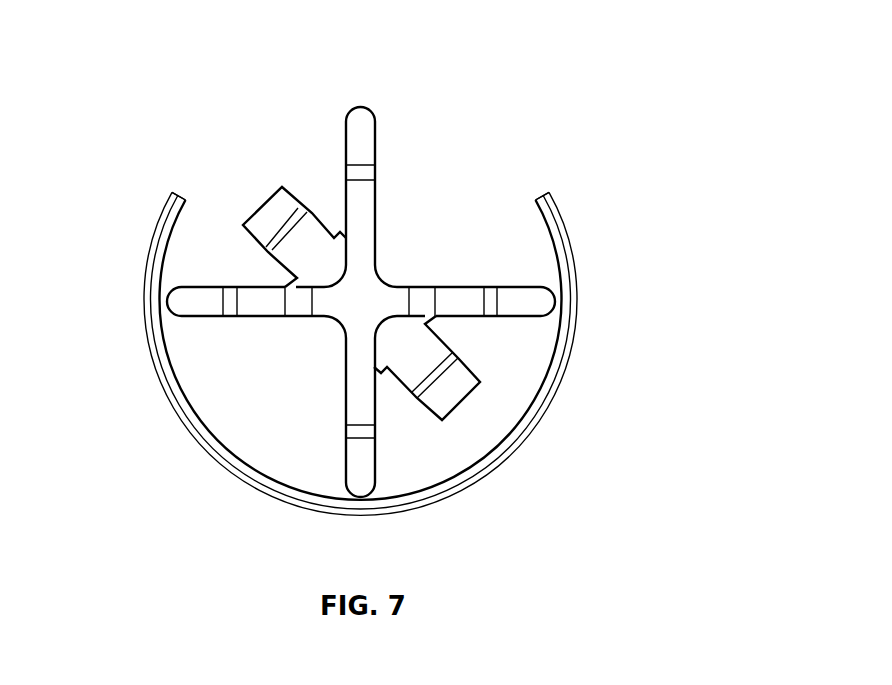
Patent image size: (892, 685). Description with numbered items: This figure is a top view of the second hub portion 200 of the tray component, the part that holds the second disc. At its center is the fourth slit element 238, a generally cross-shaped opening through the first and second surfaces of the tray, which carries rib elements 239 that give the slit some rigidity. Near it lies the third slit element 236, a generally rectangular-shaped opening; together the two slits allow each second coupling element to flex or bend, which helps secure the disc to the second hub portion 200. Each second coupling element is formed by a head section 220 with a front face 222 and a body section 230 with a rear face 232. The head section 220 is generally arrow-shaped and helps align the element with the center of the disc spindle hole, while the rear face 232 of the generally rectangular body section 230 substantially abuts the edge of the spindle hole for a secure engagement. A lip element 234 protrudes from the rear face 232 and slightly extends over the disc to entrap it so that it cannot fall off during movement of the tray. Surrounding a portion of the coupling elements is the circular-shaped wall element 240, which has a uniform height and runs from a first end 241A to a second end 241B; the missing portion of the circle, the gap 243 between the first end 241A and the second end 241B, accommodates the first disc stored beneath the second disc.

The second hub portion 200 is at (181, 72).
The head section 220 is at (400, 337).
The front face 222 is at (364, 312).
The body section 230 is at (455, 358).
The rear face 232 is at (312, 214).
The lip element 234 is at (215, 176).
The third slit element 236 is at (508, 389).
The fourth slit element 238 is at (358, 312).
The rib elements 239 is at (230, 308).
The wall element 240 is at (560, 215).
The first end 241A is at (174, 192).
The second end 241B is at (537, 193).
The gap 243 is at (403, 100).